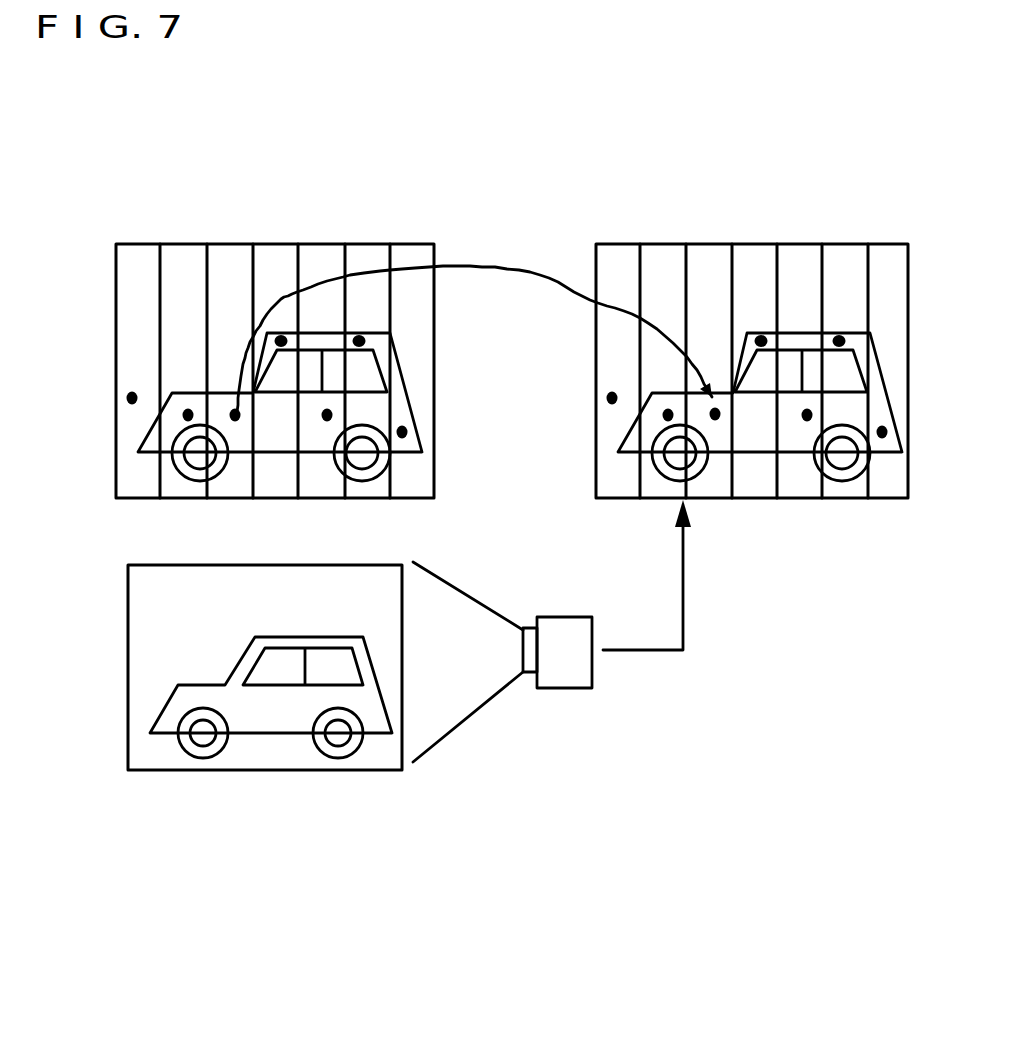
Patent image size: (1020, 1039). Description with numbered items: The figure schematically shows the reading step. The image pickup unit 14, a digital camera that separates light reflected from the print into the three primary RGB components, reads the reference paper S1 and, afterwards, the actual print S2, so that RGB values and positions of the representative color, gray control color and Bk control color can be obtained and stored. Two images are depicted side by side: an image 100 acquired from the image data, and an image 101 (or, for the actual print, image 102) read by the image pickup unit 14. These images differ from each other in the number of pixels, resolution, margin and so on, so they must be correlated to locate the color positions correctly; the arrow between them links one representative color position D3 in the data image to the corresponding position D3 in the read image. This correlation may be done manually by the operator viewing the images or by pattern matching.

The image acquired from the image data 100 is at (365, 244).
The image read by the image pickup unit 101 is at (753, 332).
The image read by the image pickup unit 102 is at (750, 244).
The position of the representative color D3 is at (233, 408).
The reference paper S1 is at (322, 712).
The actual print S2 is at (363, 770).
The image pickup unit 14 is at (570, 670).